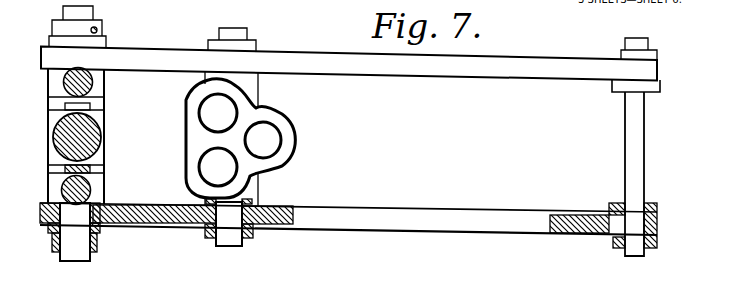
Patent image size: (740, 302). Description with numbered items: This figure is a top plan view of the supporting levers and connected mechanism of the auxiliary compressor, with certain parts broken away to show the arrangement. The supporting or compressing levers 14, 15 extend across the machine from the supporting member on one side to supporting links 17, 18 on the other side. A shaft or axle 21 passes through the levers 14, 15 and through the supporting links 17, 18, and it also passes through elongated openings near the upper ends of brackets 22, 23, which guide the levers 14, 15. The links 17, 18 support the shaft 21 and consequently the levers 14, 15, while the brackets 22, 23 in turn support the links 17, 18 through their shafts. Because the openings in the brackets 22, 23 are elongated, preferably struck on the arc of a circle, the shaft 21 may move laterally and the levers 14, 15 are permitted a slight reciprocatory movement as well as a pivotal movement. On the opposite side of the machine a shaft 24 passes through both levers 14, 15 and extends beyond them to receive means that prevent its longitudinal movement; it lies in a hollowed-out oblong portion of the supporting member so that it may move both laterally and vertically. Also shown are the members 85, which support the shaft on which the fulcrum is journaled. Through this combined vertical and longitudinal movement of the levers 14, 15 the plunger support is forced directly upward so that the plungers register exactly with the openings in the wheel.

The supporting or compressing lever 14 is at (362, 210).
The supporting or compressing lever 15 is at (358, 66).
The supporting link 17 is at (624, 55).
The supporting link 18 is at (618, 248).
The shaft or axle 21 is at (625, 140).
The bracket 22 is at (660, 86).
The bracket 23 is at (656, 212).
The shaft 24 is at (77, 258).
The members 85 is at (100, 116).